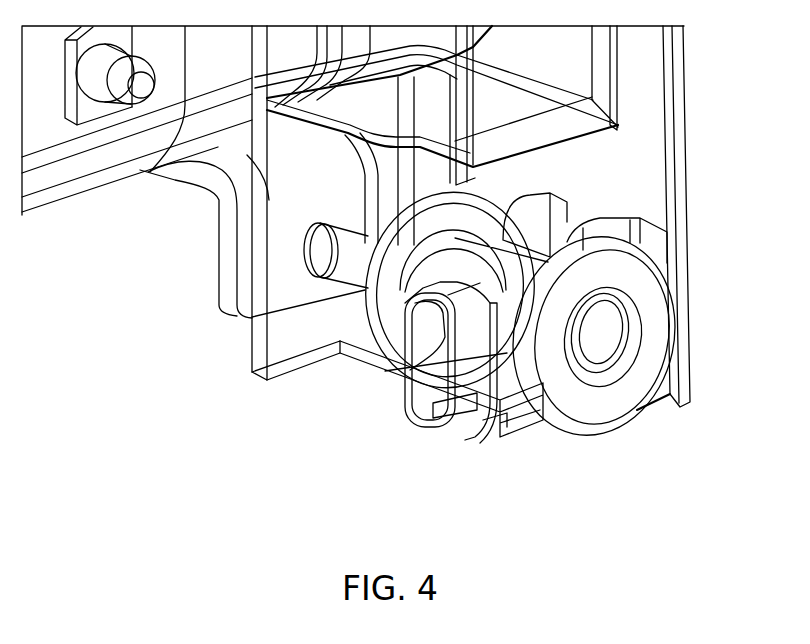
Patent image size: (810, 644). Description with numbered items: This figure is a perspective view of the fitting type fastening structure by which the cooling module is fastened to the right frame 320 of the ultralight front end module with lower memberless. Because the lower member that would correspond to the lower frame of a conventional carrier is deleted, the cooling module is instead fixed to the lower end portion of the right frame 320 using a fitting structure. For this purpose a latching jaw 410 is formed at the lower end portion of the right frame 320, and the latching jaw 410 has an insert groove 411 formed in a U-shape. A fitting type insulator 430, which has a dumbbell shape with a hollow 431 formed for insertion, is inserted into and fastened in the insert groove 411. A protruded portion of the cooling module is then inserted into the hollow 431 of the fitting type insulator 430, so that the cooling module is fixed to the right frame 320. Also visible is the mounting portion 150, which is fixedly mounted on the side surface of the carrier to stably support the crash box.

The mounting portion 150 is at (177, 175).
The right frame 320 is at (252, 367).
The latching jaw 410 is at (407, 380).
The insert groove 411 is at (505, 440).
The fitting type insulator 430 is at (603, 407).
The hollow 431 is at (588, 337).